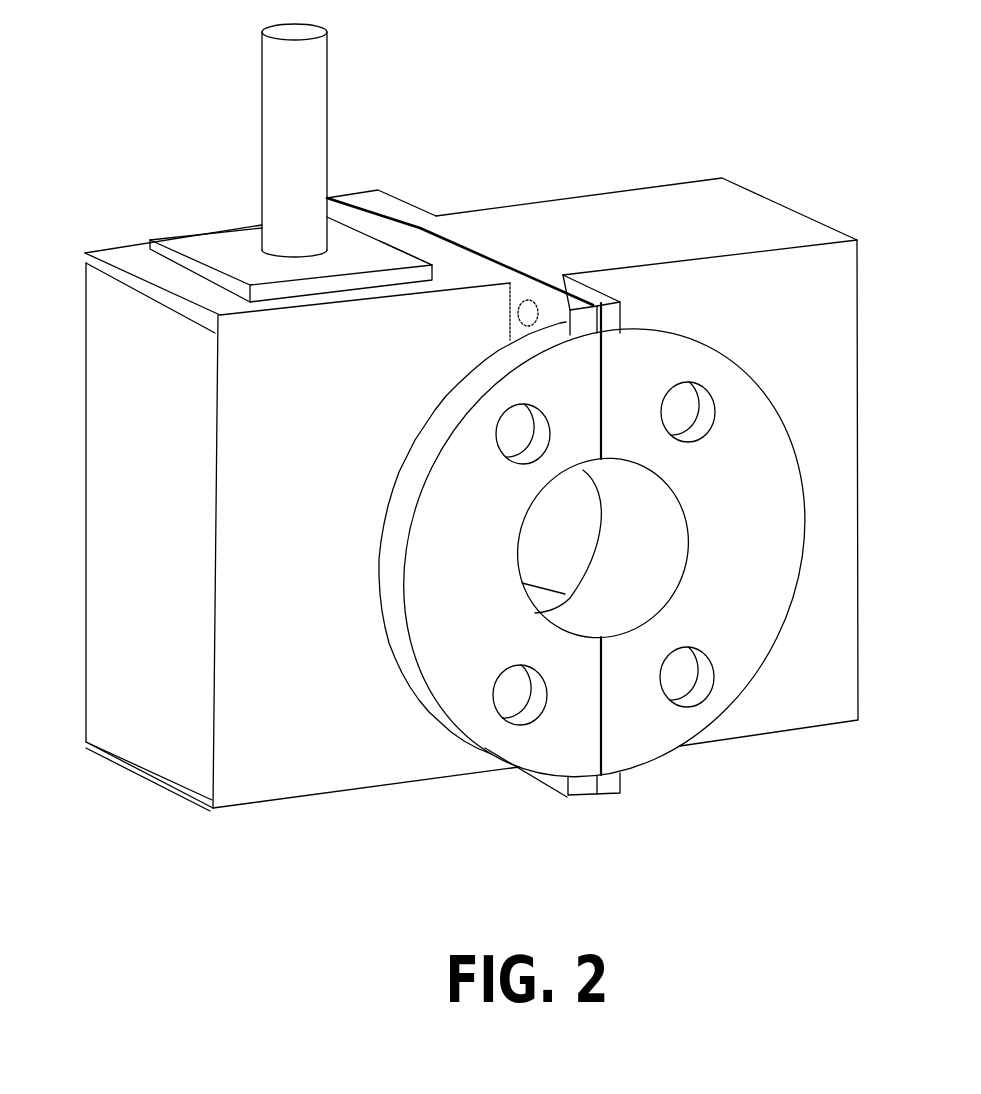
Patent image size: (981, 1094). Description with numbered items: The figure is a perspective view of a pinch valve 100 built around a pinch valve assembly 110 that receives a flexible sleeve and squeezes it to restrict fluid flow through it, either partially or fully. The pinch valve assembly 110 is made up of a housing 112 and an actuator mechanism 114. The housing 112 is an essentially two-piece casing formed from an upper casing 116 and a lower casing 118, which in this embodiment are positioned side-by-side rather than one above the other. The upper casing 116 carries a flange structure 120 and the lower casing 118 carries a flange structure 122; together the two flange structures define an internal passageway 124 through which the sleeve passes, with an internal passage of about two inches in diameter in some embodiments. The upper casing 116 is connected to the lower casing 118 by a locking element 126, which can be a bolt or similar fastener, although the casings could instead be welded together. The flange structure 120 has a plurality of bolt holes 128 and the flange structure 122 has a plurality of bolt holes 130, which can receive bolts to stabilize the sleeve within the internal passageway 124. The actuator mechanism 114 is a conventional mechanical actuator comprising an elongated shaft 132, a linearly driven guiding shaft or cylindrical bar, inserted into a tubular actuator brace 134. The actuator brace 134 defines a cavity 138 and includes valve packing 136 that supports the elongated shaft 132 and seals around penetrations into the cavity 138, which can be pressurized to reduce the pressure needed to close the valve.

The pinch valve 100 is at (186, 116).
The pinch valve assembly 110 is at (605, 161).
The housing 112 is at (330, 197).
The actuator mechanism 114 is at (343, 105).
The upper casing 116 is at (104, 414).
The lower casing 118 is at (827, 345).
The flange structure 120 is at (433, 443).
The flange structure 122 is at (697, 352).
The internal passageway 124 is at (583, 470).
The locking element 126 is at (528, 306).
The bolt holes 128 is at (503, 456).
The bolt holes 130 is at (695, 440).
The elongated shaft 132 is at (280, 200).
The actuator brace 134 is at (205, 243).
The valve packing 136 is at (262, 247).
The cavity 138 is at (330, 249).